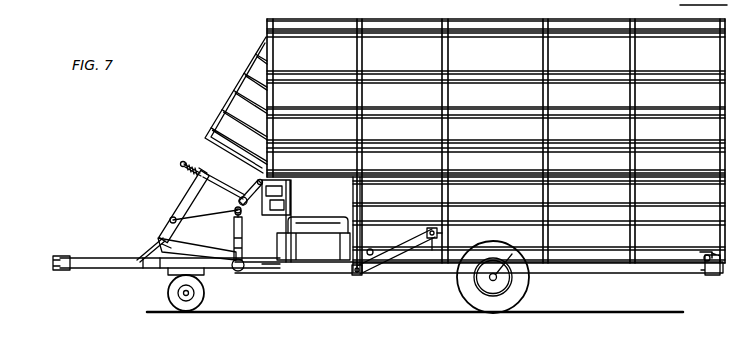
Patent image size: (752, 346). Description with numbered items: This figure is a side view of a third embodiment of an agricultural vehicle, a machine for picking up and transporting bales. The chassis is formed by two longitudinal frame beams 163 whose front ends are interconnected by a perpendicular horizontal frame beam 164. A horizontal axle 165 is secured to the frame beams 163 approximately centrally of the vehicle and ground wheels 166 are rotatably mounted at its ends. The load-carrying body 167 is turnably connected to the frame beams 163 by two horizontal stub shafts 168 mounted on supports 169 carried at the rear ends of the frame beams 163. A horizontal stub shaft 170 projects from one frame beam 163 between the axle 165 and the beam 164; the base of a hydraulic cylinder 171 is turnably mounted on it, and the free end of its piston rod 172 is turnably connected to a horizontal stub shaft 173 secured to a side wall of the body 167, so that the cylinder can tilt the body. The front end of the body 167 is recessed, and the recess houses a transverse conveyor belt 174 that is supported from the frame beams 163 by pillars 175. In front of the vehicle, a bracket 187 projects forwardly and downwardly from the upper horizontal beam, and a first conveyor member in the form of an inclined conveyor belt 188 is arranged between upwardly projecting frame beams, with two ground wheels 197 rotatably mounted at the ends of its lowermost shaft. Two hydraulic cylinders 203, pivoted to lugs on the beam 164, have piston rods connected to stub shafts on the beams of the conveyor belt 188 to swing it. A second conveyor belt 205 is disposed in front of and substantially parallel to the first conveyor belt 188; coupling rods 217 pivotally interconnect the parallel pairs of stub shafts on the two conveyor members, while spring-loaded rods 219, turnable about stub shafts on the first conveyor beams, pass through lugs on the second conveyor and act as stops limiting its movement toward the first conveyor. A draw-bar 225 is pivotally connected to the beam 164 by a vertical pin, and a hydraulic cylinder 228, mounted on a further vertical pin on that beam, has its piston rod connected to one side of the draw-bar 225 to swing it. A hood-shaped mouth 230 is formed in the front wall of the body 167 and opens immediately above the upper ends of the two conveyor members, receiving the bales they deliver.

The longitudinal frame beam 163 is at (612, 272).
The horizontal frame beam 164 is at (236, 276).
The horizontal axle 165 is at (521, 241).
The ground wheel 166 is at (524, 285).
The body 167 is at (595, 24).
The horizontal stub shaft 168 is at (703, 252).
The support 169 is at (703, 278).
The horizontal stub shaft 170 is at (356, 277).
The hydraulic cylinder 171 is at (395, 263).
The piston rod 172 is at (426, 227).
The horizontal stub shaft 173 is at (440, 232).
The conveyor belt 174 is at (327, 210).
The pillar 175 is at (342, 247).
The bracket 187 is at (137, 258).
The conveyor belt 188 is at (210, 242).
The ground wheel 197 is at (187, 311).
The hydraulic cylinder 203 is at (243, 233).
The second conveyor belt 205 is at (178, 195).
The coupling rod 217 is at (223, 208).
The rod 219 is at (246, 192).
The draw-bar 225 is at (90, 244).
The hydraulic cylinder 228 is at (175, 268).
The hood-shaped mouth 230 is at (230, 112).